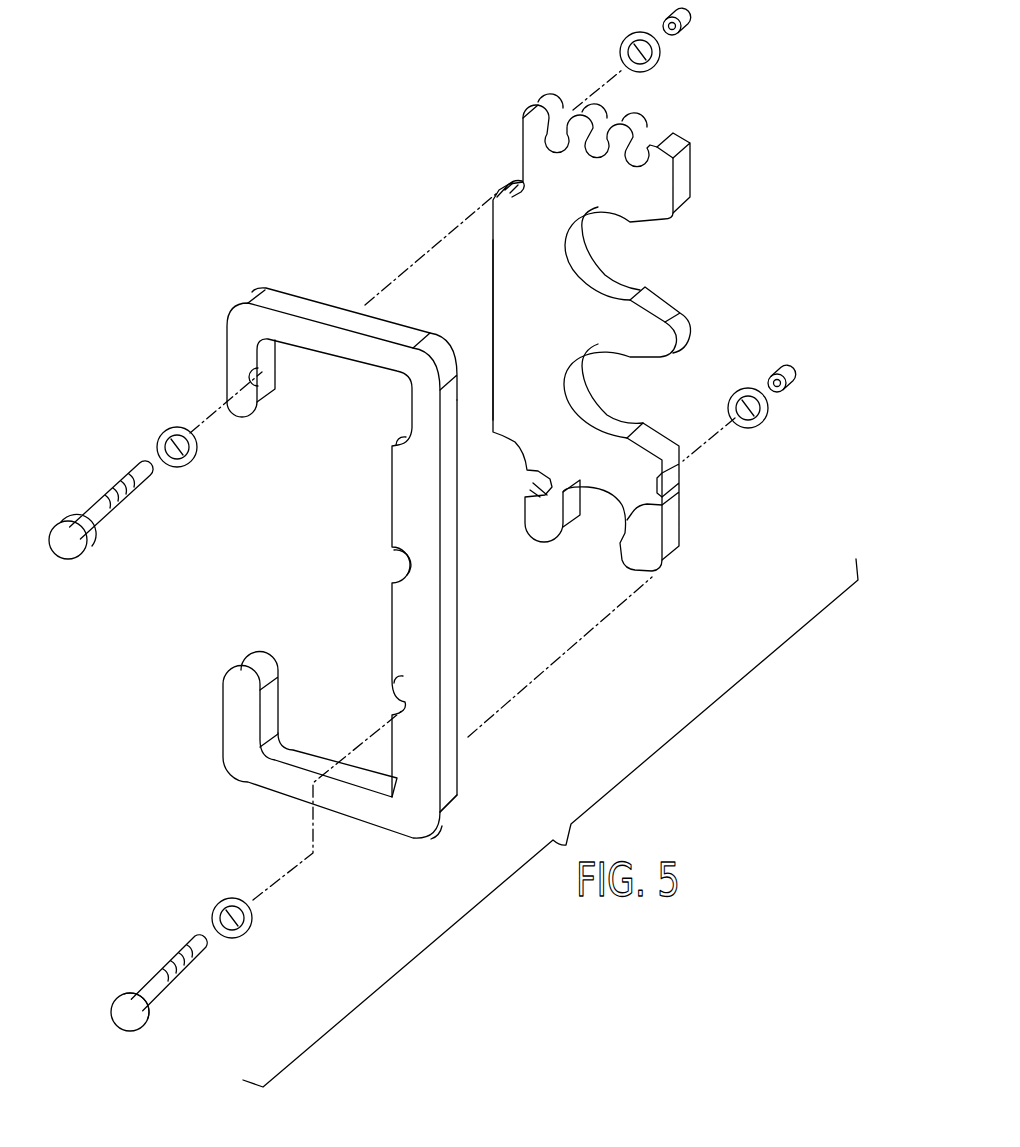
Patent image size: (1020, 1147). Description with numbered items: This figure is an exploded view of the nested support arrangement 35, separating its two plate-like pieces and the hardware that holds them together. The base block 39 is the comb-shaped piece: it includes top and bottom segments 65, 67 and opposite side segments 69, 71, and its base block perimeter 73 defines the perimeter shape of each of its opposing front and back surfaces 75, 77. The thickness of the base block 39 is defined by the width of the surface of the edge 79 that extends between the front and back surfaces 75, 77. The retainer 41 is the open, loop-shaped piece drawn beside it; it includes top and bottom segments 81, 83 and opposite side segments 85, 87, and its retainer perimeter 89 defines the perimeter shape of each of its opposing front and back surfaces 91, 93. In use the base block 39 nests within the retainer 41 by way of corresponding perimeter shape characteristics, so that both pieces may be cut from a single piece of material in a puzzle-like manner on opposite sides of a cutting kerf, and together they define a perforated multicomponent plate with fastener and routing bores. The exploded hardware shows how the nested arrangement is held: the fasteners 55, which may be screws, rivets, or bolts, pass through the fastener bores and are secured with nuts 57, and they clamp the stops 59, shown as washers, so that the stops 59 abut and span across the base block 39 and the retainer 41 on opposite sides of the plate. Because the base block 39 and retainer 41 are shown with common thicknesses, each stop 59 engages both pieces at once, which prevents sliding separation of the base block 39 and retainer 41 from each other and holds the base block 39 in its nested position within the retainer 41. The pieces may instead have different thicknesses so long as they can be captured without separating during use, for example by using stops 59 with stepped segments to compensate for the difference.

The nested support arrangement 35 is at (340, 204).
The base block 39 is at (545, 75).
The retainer 41 is at (440, 830).
The fasteners 55 is at (123, 513).
The nuts 57 is at (684, 32).
The stops 59 is at (657, 68).
The top segment 65 is at (568, 88).
The bottom segment 67 is at (543, 551).
The side segment 69 is at (483, 248).
The side segment 71 is at (683, 297).
The base block perimeter 73 is at (497, 178).
The front surface 75 is at (498, 290).
The back surface 77 is at (693, 164).
The edge 79 is at (543, 102).
The top segment 81 is at (318, 293).
The bottom segment 83 is at (290, 809).
The side segment 85 is at (212, 681).
The side segment 87 is at (465, 766).
The retainer perimeter 89 is at (262, 295).
The front surface 91 is at (400, 500).
The back surface 93 is at (453, 352).